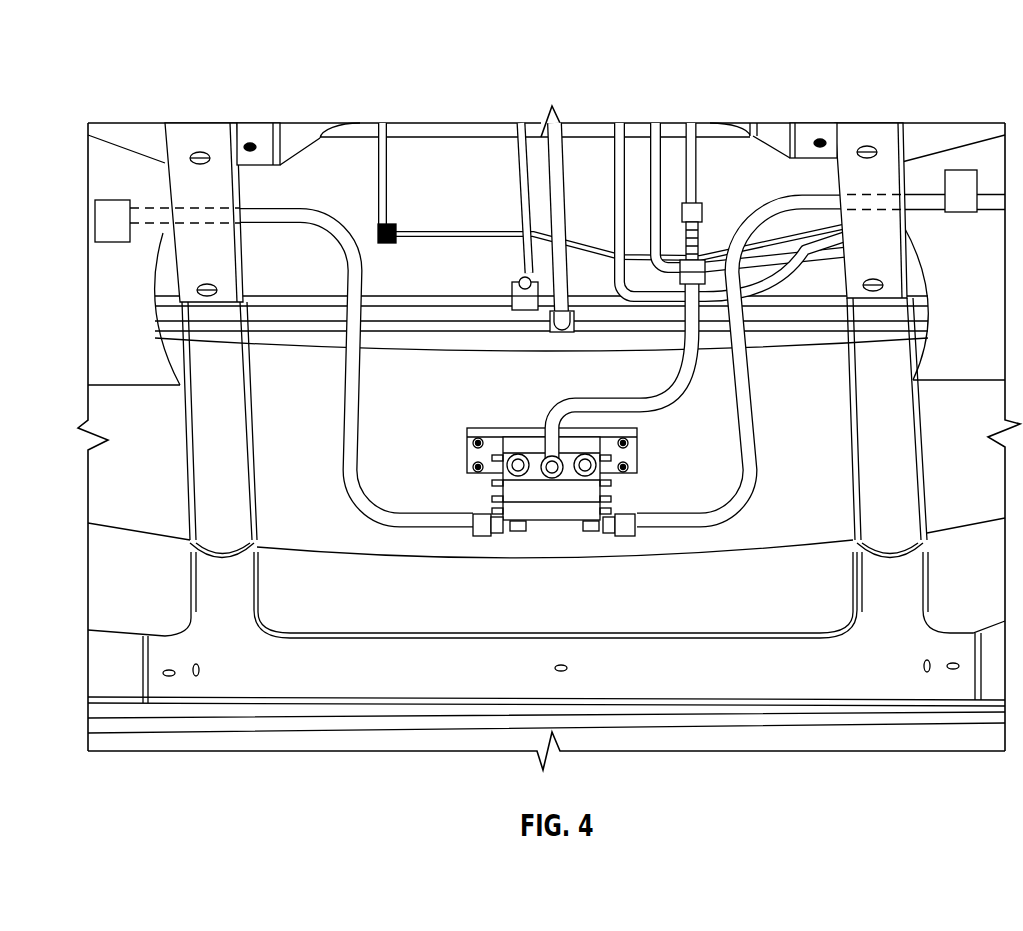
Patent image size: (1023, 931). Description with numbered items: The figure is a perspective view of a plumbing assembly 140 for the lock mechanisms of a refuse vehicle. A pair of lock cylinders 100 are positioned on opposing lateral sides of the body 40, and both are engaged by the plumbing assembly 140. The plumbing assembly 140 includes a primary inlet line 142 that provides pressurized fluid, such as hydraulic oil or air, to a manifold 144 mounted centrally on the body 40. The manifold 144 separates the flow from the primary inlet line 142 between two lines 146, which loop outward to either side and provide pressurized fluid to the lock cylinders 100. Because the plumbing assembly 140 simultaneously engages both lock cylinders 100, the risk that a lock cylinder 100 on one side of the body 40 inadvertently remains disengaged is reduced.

The body 40 is at (837, 463).
The lock cylinders 100 is at (97, 200).
The plumbing assembly 140 is at (513, 402).
The primary inlet line 142 is at (655, 400).
The manifold 144 is at (552, 508).
The lines 146 is at (368, 493).